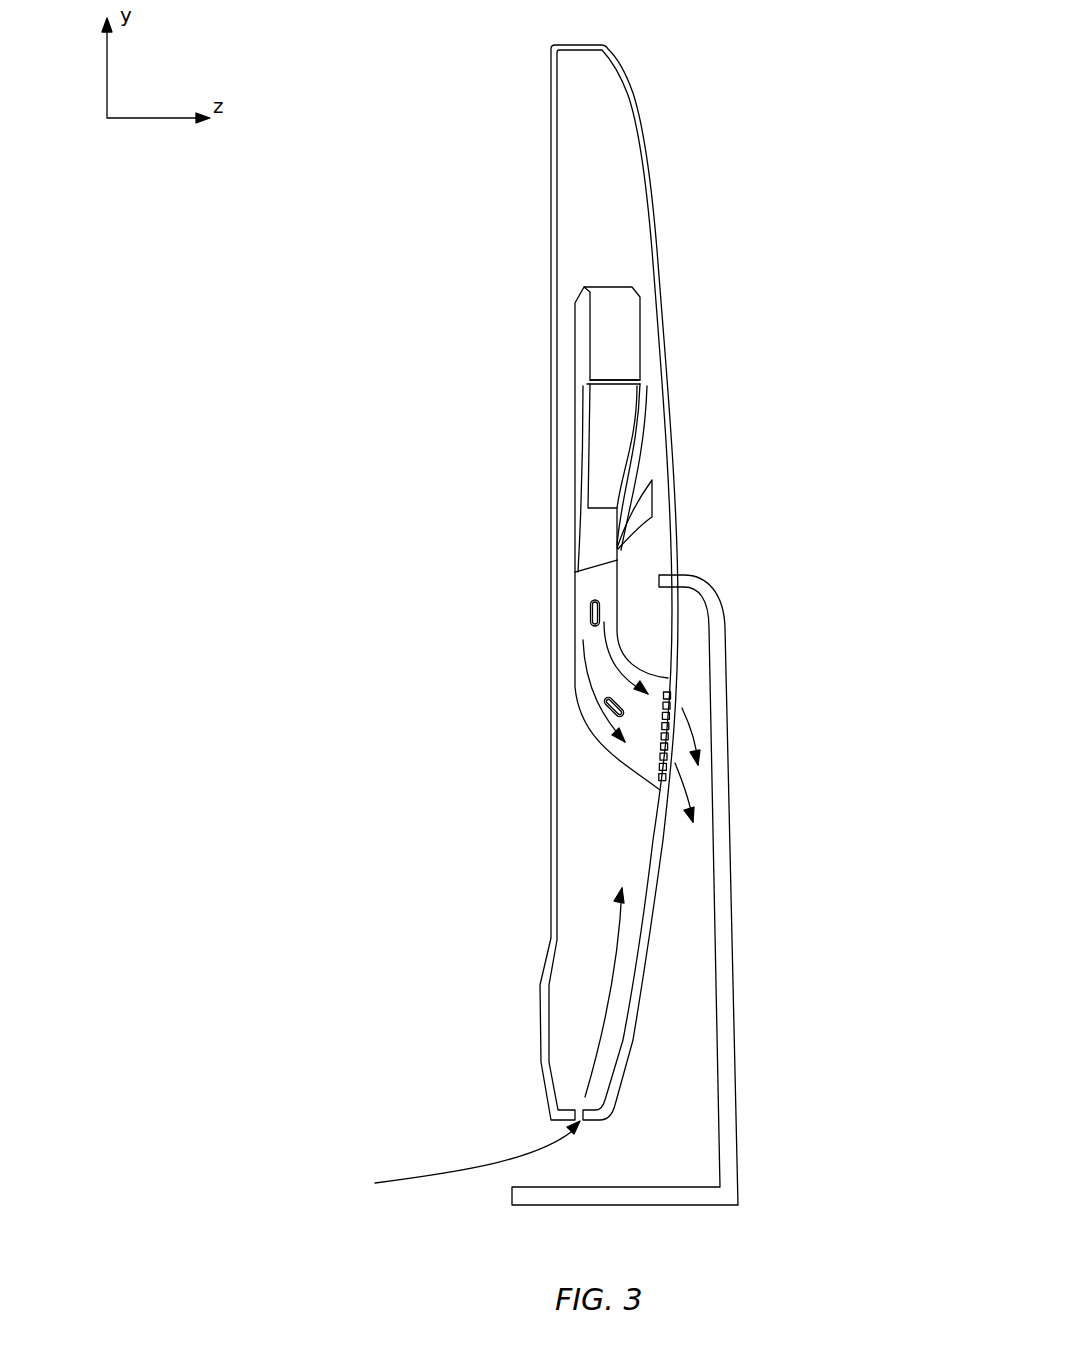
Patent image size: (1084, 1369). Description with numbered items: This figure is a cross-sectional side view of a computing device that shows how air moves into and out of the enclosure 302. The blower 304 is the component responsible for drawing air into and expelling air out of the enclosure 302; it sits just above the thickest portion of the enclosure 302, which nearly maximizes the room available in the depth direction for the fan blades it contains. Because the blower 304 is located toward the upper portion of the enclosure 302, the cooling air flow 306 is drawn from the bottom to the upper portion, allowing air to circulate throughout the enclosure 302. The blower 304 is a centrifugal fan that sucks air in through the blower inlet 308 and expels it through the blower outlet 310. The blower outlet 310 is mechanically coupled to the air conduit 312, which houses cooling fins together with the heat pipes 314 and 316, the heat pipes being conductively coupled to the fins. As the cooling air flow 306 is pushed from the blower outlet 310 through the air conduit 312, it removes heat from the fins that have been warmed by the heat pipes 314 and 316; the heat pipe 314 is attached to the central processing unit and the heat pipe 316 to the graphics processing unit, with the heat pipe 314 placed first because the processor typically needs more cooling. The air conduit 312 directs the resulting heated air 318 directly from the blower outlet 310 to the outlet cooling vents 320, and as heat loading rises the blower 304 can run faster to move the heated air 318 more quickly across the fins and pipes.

The enclosure 302 is at (643, 152).
The blower 304 is at (648, 327).
The cooling air flow 306 is at (477, 1152).
The blower inlet 308 is at (648, 372).
The blower outlet 310 is at (575, 572).
The air conduit 312 is at (573, 582).
The heat pipe 314 is at (590, 619).
The heat pipe 316 is at (610, 708).
The heated air 318 is at (612, 722).
The outlet cooling vents 320 is at (676, 693).